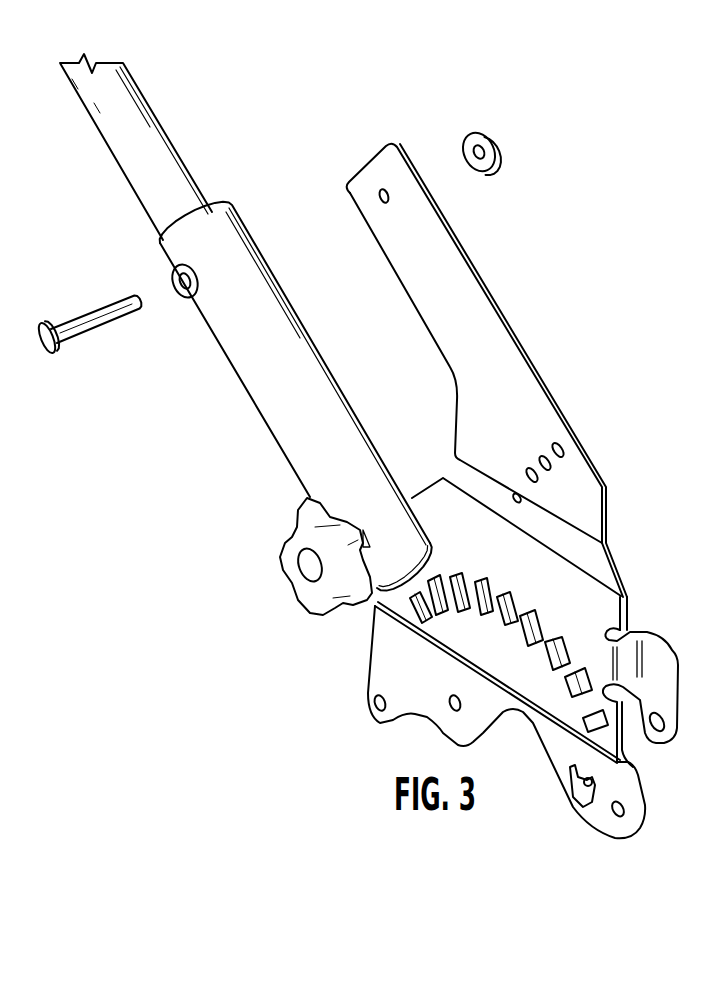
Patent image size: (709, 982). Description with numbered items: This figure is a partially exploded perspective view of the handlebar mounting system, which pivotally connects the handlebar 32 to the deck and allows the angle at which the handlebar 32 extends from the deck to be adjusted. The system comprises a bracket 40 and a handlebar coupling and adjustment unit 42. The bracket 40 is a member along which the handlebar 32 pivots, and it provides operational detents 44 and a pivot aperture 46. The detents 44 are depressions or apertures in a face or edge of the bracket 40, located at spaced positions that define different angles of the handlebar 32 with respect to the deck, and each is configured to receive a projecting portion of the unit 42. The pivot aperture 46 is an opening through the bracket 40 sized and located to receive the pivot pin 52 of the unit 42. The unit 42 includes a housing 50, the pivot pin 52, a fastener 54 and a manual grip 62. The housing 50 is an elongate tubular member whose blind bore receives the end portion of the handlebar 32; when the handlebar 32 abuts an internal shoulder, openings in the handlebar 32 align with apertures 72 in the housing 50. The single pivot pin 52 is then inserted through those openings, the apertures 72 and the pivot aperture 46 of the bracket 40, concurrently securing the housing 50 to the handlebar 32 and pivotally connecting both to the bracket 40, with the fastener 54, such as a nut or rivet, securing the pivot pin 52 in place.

The handlebar 32 is at (180, 158).
The bracket 40 is at (453, 237).
The handlebar coupling and adjustment unit 42 is at (237, 379).
The detents 44 is at (560, 447).
The pivot aperture 46 is at (380, 197).
The housing 50 is at (327, 362).
The pivot pin 52 is at (85, 318).
The fastener 54 is at (490, 132).
The manual grip 62 is at (327, 612).
The apertures 72 is at (171, 282).